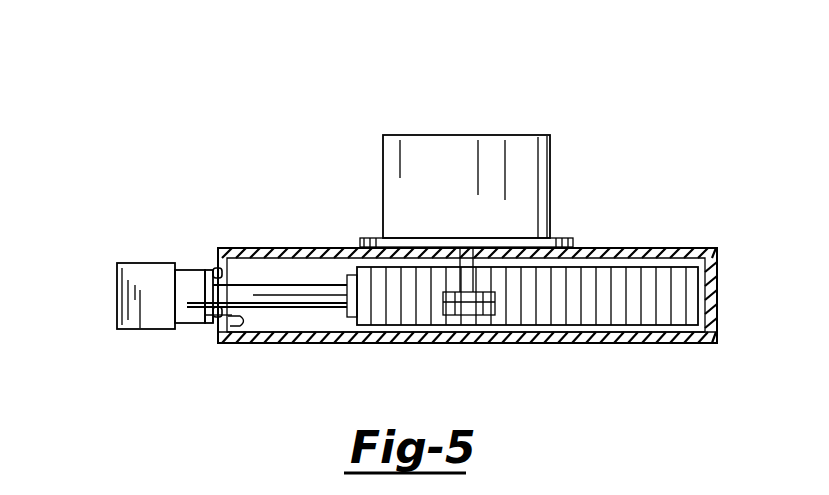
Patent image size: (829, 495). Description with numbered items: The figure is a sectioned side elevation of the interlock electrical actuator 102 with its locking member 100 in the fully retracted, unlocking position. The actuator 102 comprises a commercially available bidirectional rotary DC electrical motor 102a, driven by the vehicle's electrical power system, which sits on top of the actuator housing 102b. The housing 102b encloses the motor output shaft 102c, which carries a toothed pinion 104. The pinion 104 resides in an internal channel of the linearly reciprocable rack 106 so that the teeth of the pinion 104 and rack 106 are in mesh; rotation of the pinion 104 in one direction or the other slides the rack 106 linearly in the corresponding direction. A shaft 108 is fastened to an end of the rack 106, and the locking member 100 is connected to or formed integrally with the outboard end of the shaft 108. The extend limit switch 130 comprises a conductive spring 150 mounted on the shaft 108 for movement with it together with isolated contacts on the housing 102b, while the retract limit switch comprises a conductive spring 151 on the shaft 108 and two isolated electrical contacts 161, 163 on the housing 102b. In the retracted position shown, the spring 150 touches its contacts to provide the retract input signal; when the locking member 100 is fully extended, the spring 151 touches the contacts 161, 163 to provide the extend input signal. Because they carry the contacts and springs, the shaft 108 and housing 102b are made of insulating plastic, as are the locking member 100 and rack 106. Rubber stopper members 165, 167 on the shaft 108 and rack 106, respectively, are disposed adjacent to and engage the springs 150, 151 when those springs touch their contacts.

The locking member 100 is at (127, 258).
The electrical actuator 102 is at (608, 208).
The bidirectional rotary DC electrical motor 102a is at (446, 150).
The actuator housing 102b is at (690, 345).
The motor output shaft 102c is at (492, 240).
The toothed pinion 104 is at (480, 302).
The rack 106 is at (612, 343).
The shaft 108 is at (287, 286).
The extend limit switch 130 is at (206, 266).
The conductive spring 150 is at (210, 325).
The conductive spring 151 is at (348, 322).
The electrical contact 161 is at (243, 262).
The electrical contact 163 is at (236, 332).
The rubber stopper member 165 is at (186, 272).
The rubber stopper member 167 is at (372, 268).